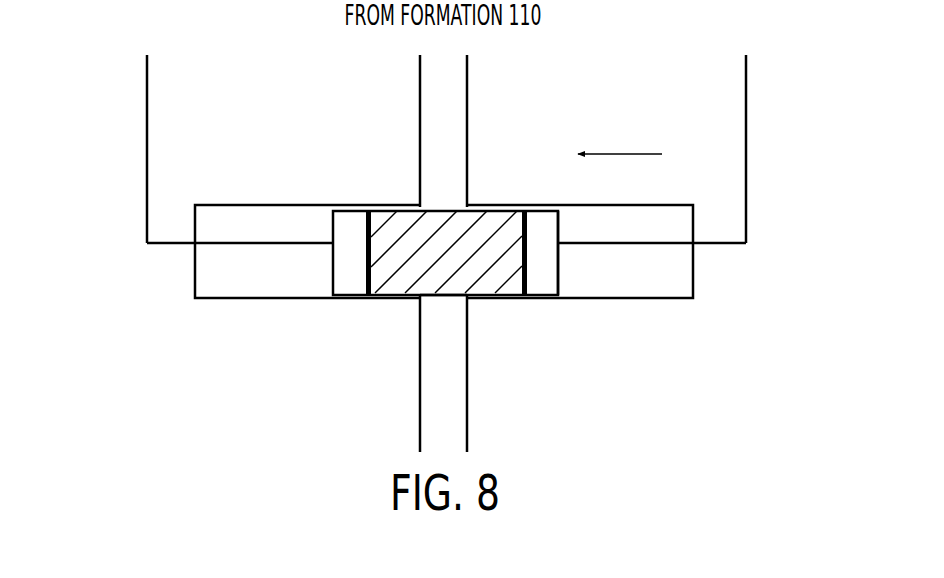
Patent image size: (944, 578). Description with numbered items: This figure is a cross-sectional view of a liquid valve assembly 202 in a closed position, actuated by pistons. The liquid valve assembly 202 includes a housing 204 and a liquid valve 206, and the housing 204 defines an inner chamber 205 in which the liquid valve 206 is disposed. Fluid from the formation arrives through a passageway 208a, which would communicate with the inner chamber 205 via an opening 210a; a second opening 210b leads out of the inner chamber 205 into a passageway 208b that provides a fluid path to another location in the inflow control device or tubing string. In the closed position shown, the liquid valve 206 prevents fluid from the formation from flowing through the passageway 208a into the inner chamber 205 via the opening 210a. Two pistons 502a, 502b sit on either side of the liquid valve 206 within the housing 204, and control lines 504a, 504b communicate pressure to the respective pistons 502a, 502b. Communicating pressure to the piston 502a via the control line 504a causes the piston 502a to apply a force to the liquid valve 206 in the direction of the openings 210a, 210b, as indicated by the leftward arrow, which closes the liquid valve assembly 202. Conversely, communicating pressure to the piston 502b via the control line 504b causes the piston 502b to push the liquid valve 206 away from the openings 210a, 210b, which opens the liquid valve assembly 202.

The liquid valve assembly 202 is at (248, 92).
The housing 204 is at (257, 198).
The inner chamber 205 is at (220, 282).
The liquid valve 206 is at (527, 236).
The passageway 208a is at (443, 104).
The passageway 208b is at (442, 420).
The opening 210a is at (442, 199).
The opening 210b is at (441, 303).
The piston 502a is at (560, 278).
The piston 502b is at (333, 238).
The control line 504a is at (755, 116).
The control line 504b is at (140, 117).